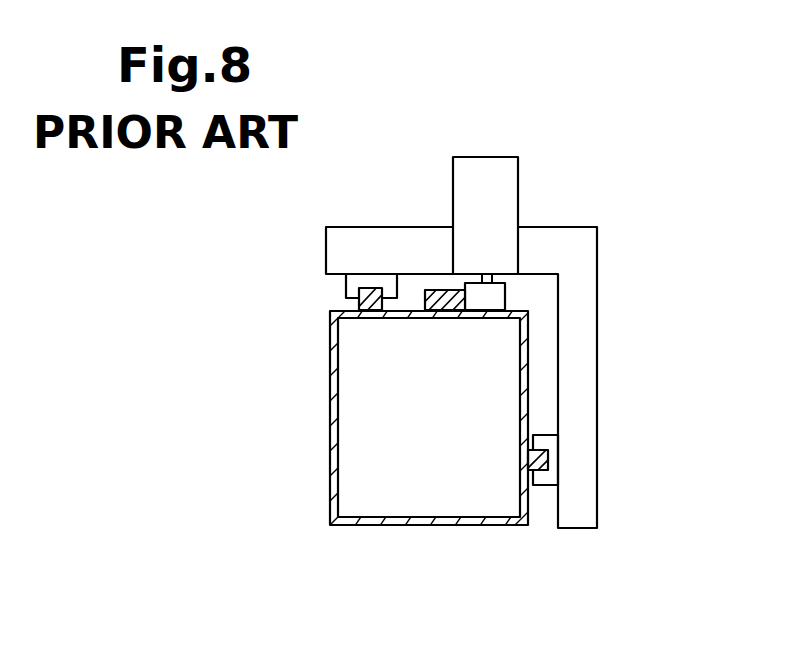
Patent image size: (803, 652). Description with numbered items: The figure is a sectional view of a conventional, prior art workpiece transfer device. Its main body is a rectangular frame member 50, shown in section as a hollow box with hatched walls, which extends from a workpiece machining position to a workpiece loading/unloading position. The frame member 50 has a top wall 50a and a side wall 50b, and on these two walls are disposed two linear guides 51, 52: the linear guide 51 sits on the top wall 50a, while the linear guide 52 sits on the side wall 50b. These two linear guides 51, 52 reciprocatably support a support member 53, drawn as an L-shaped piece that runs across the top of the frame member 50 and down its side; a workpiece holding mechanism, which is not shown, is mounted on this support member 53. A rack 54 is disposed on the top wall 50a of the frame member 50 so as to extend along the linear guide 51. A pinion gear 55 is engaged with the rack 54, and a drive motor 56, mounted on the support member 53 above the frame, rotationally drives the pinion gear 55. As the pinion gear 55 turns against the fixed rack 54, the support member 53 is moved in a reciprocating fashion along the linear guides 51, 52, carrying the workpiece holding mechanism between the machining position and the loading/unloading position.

The frame member 50 is at (326, 469).
The top wall 50a is at (322, 308).
The side wall 50b is at (532, 511).
The linear guide 51 is at (338, 289).
The linear guide 52 is at (541, 493).
The support member 53 is at (603, 297).
The rack 54 is at (418, 297).
The pinion gear 55 is at (507, 295).
The drive motor 56 is at (519, 173).